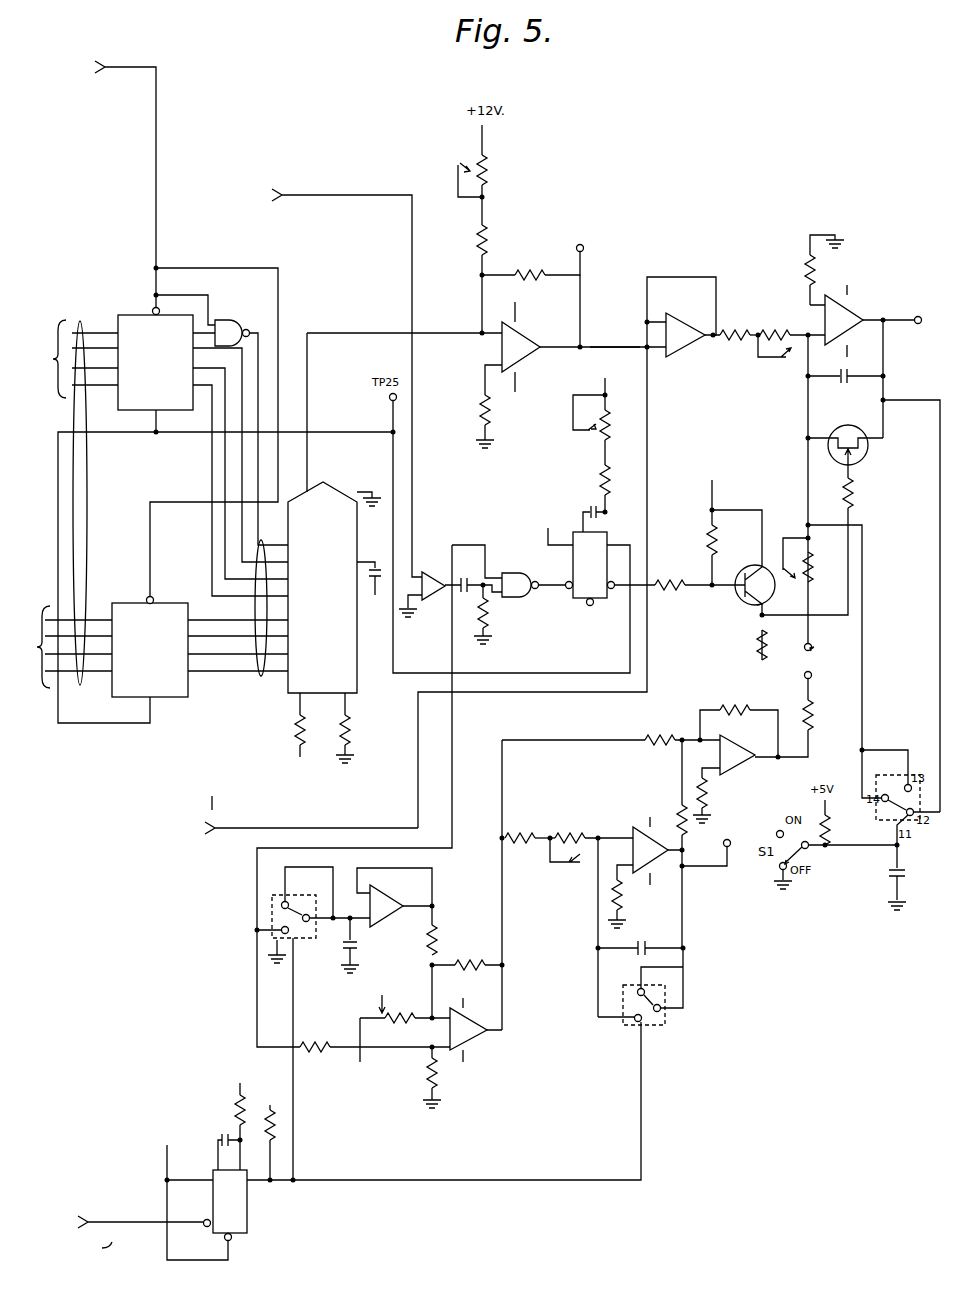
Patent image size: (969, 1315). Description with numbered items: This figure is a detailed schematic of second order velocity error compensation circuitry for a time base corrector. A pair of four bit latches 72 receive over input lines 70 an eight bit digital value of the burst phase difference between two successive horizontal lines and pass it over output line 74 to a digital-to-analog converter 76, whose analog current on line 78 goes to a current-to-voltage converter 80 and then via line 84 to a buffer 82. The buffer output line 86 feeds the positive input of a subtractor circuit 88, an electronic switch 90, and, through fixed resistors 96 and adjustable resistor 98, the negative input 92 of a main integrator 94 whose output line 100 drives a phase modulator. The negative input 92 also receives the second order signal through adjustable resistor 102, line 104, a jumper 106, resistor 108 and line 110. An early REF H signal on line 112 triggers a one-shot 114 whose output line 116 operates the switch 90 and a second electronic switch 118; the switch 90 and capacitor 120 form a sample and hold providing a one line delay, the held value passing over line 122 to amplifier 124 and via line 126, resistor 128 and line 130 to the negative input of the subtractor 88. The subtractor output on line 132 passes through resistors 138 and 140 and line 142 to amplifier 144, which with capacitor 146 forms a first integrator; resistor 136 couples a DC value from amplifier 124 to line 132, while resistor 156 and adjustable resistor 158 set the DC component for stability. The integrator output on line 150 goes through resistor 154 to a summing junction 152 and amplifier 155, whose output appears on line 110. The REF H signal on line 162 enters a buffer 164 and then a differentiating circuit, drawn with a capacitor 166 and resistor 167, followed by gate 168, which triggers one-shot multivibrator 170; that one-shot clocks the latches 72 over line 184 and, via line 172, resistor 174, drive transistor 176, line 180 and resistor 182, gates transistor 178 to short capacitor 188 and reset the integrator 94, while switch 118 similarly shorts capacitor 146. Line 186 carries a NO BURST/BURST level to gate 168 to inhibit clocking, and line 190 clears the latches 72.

The input lines 70 is at (77, 504).
The four bit latches 72 is at (183, 410).
The output line 74 is at (260, 686).
The digital-to-analog converter 76 is at (357, 688).
The line 78 is at (307, 376).
The current-to-voltage converter 80 is at (541, 352).
The buffer 82 is at (680, 325).
The line 84 is at (610, 345).
The output line 86 is at (691, 277).
The subtractor circuit 88 is at (482, 1040).
The electronic switch 90 is at (272, 906).
The negative input 92 is at (808, 361).
The integrator 94 is at (855, 309).
The fixed resistors 96 is at (739, 340).
The adjustable resistor 98 is at (773, 328).
The line 100 is at (903, 325).
The adjustable resistor 102 is at (814, 572).
The line 104 is at (812, 628).
The jumper 106 is at (826, 678).
The resistor 108 is at (812, 730).
The line 110 is at (781, 759).
The line 112 is at (113, 1220).
The one-shot 114 is at (262, 1220).
The output line 116 is at (295, 1131).
The second electronic switch 118 is at (674, 1022).
The capacitor 120 is at (362, 950).
The line 122 is at (332, 925).
The amplifier 124 is at (400, 886).
The line 126 is at (434, 905).
The resistor 128 is at (438, 936).
The line 130 is at (434, 985).
The line 132 is at (505, 1010).
The resistor 136 is at (488, 962).
The resistor 138 is at (520, 836).
The adjustable resistor 140 is at (570, 836).
The line 142 is at (614, 828).
The amplifier 144 is at (678, 867).
The capacitor 146 is at (645, 944).
The line 150 is at (684, 852).
The summing junction 152 is at (689, 738).
The resistor 154 is at (677, 816).
The amplifier 155 is at (737, 764).
The resistor 156 is at (396, 1030).
The adjustable resistor 158 is at (330, 1042).
The line 162 is at (318, 195).
The buffer 164 is at (424, 572).
The capacitor 166 is at (464, 594).
The resistor 167 is at (487, 600).
The gate 168 is at (533, 593).
The one-shot multivibrator 170 is at (593, 606).
The line 172 is at (657, 590).
The resistor 174 is at (667, 580).
The drive transistor 176 is at (745, 606).
The transistor 178 is at (870, 457).
The line 180 is at (862, 576).
The resistor 182 is at (859, 494).
The line 184 is at (606, 540).
The line 186 is at (245, 830).
The capacitor 188 is at (885, 379).
The line 190 is at (122, 70).